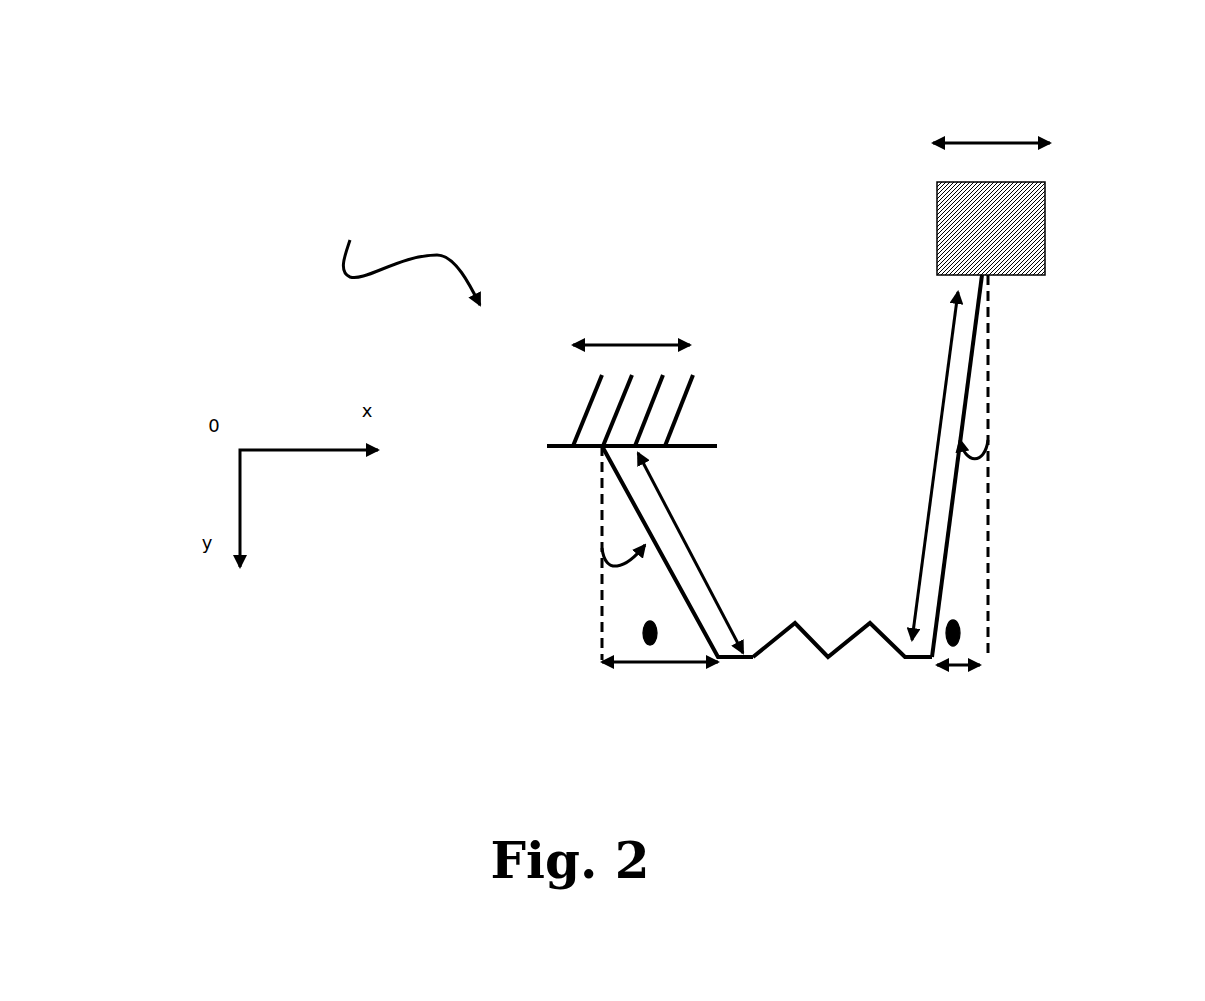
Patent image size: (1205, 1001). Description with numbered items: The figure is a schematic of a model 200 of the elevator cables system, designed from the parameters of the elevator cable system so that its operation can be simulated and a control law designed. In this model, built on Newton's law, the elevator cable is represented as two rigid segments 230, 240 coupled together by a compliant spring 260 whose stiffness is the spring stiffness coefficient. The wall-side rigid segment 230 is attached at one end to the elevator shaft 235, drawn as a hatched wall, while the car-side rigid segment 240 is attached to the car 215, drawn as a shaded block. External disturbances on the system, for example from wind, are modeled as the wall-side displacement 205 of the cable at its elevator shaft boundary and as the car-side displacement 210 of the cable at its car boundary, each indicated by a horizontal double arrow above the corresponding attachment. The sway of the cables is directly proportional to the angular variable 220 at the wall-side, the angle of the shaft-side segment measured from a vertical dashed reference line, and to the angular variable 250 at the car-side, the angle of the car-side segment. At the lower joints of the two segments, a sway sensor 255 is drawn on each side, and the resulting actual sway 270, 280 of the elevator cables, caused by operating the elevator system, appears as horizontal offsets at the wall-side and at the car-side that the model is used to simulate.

The model of the elevator cables system 200 is at (377, 225).
The external disturbance w(t) at the wall-side 205 is at (620, 308).
The external disturbance c(t) at the car-side 210 is at (998, 95).
The car 215 is at (1045, 223).
The angular variable at the wall-side 220 is at (587, 583).
The rigid segment 230 is at (725, 540).
The elevator shaft 235 is at (578, 403).
The rigid segment 240 is at (909, 400).
The angular variable at the car-side 250 is at (1030, 472).
The sway sensor 255 is at (637, 632).
The compliant spring 260 is at (823, 590).
The actual sway 270 is at (667, 678).
The actual sway 280 is at (960, 683).